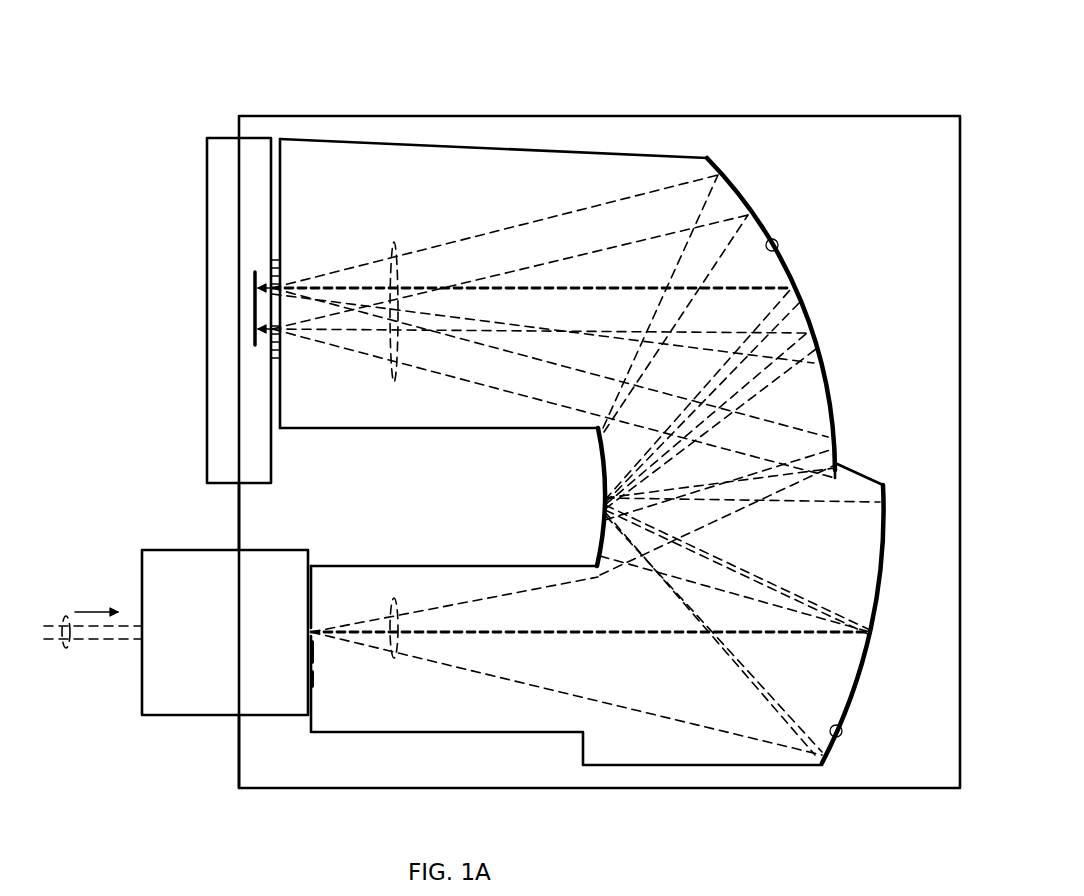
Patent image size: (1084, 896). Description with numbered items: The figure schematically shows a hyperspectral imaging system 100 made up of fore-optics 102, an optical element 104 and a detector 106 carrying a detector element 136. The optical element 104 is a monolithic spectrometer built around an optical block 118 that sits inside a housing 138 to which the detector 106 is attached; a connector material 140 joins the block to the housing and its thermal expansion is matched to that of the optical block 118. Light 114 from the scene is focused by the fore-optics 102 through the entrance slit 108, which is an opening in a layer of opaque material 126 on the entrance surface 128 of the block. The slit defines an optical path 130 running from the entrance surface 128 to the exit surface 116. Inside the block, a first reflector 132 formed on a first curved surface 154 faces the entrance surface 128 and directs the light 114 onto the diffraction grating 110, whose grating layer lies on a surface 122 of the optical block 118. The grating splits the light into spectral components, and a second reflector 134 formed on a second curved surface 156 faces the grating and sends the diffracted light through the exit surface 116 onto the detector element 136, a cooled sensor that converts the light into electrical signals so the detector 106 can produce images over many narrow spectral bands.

The hyperspectral imaging system 100 is at (150, 216).
The fore-optics 102 is at (192, 623).
The optical element 104 is at (770, 208).
The detector 106 is at (207, 314).
The entrance slit 108 is at (308, 632).
The diffraction grating 110 is at (560, 500).
The light 114 is at (394, 384).
The exit surface 116 is at (284, 350).
The optical block 118 is at (494, 145).
The surface 122 is at (606, 464).
The layer of opaque material 126 is at (308, 648).
The entrance surface 128 is at (308, 682).
The optical path 130 is at (560, 637).
The first reflector 132 is at (882, 592).
The second reflector 134 is at (836, 378).
The detector element 136 is at (252, 296).
The housing 138 is at (889, 110).
The connector material 140 is at (276, 138).
The first curved surface 154 is at (841, 735).
The second curved surface 156 is at (778, 244).